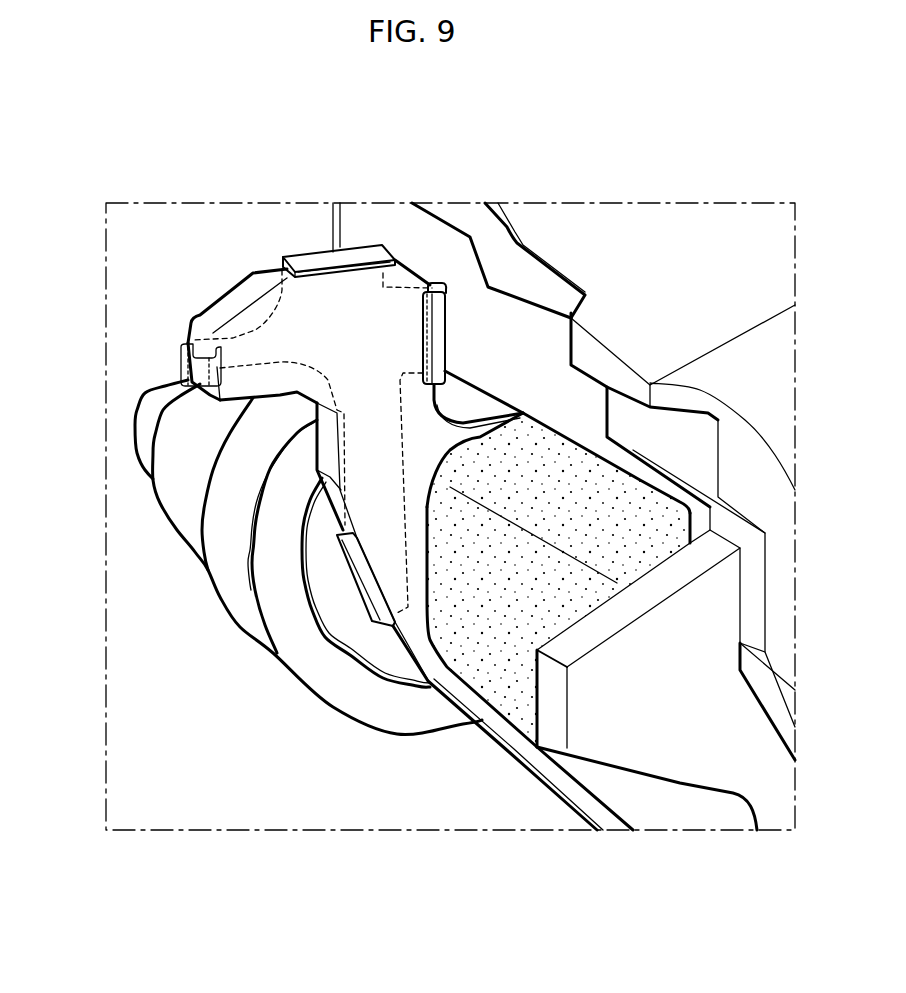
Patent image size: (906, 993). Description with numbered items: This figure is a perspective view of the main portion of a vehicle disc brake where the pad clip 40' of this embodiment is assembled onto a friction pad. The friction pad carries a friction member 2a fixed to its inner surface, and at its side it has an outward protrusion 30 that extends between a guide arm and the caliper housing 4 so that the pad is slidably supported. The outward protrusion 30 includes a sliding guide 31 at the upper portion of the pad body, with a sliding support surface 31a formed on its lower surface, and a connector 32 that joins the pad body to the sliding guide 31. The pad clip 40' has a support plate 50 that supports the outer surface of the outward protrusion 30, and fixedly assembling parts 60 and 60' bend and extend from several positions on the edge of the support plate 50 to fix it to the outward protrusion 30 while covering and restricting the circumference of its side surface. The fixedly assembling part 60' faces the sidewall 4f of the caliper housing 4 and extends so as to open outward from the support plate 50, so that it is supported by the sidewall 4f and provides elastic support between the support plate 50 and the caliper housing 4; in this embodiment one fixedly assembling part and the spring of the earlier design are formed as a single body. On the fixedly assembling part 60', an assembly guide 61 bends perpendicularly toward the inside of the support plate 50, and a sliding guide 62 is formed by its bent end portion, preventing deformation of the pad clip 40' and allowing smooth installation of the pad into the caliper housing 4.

The caliper housing 4 is at (692, 237).
The sidewall of the caliper housing 4f is at (542, 323).
The friction member 2a is at (500, 687).
The support plate 50 is at (295, 375).
The pad clip 40' is at (358, 460).
The outward protrusion 30 is at (215, 295).
The sliding guide 31 is at (200, 322).
The sliding support surface 31a is at (252, 393).
The connector 32 is at (310, 423).
The fixedly assembling part 60 is at (218, 460).
The fixedly assembling part 60' is at (556, 402).
The assembly guide 61 is at (431, 287).
The sliding guide 62 is at (424, 348).